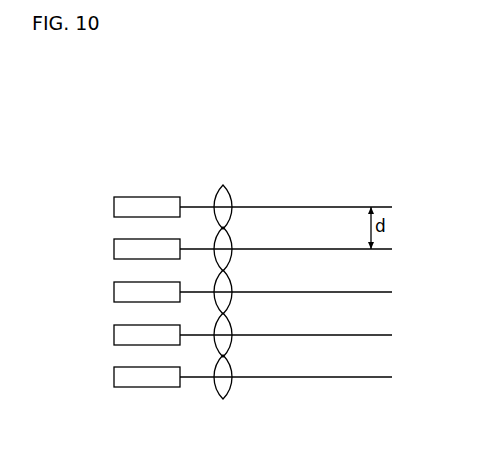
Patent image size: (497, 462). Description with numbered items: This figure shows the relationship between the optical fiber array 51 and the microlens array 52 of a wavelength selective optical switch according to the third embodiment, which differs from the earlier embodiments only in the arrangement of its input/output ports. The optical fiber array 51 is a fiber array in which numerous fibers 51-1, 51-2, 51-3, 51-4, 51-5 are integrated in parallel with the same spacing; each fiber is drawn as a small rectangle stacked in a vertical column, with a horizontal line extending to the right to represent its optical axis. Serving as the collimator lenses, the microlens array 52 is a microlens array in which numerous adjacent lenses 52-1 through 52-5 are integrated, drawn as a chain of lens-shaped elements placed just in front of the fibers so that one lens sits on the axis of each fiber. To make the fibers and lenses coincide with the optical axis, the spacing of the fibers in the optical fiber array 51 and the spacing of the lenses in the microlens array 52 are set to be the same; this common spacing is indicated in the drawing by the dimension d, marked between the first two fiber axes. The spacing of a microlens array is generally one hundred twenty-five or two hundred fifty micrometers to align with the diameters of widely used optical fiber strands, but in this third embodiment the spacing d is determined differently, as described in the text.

The optical fiber array 51 is at (159, 192).
The fiber 51-1 is at (124, 197).
The fiber 51-2 is at (124, 239).
The fiber 51-3 is at (124, 282).
The fiber 51-4 is at (124, 325).
The fiber 51-5 is at (124, 367).
The microlens array 52 is at (225, 160).
The lens 52-1 is at (233, 200).
The lens 52-5 is at (232, 381).